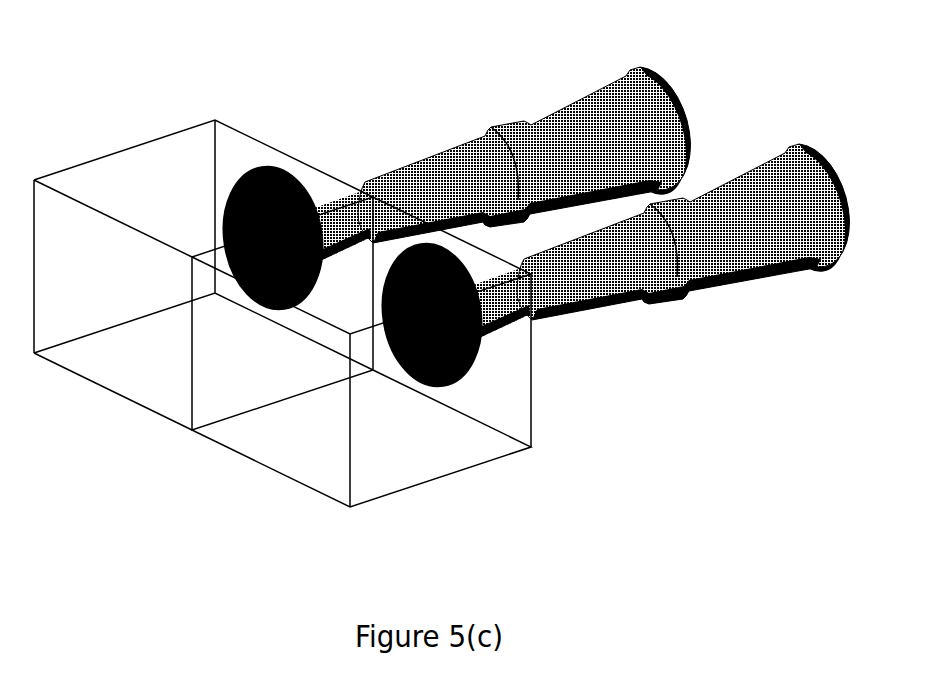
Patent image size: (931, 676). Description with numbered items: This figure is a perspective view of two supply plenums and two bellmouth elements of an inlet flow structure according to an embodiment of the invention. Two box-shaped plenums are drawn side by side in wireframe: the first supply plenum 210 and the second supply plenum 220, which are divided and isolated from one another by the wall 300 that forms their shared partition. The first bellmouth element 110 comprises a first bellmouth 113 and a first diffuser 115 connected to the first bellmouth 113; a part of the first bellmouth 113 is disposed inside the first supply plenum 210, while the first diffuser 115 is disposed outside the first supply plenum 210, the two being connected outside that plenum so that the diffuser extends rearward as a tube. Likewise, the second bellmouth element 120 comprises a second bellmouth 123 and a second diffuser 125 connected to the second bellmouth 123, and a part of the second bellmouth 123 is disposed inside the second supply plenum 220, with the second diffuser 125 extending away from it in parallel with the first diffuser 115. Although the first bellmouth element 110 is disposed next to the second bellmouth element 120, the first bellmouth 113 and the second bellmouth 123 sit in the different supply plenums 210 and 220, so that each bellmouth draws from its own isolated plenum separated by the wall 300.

The first bellmouth element 110 is at (451, 161).
The first bellmouth 113 is at (315, 208).
The first diffuser 115 is at (438, 190).
The second bellmouth element 120 is at (610, 310).
The second bellmouth 123 is at (536, 339).
The second diffuser 125 is at (683, 278).
The first supply plenum 210 is at (88, 405).
The second supply plenum 220 is at (250, 485).
The wall 300 is at (192, 398).